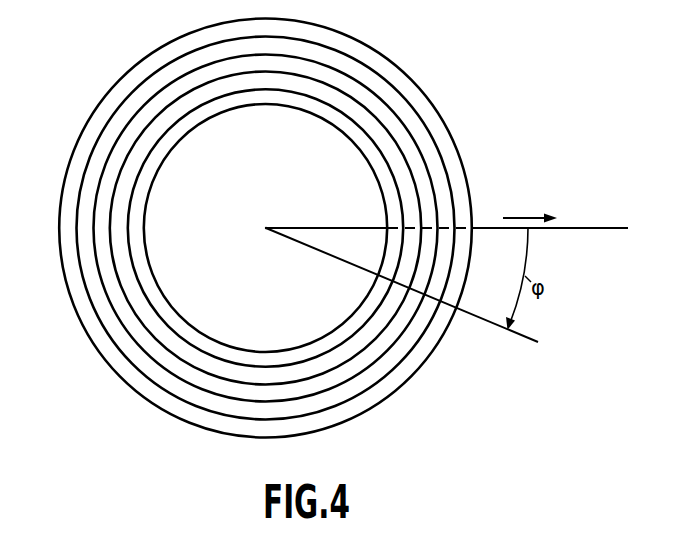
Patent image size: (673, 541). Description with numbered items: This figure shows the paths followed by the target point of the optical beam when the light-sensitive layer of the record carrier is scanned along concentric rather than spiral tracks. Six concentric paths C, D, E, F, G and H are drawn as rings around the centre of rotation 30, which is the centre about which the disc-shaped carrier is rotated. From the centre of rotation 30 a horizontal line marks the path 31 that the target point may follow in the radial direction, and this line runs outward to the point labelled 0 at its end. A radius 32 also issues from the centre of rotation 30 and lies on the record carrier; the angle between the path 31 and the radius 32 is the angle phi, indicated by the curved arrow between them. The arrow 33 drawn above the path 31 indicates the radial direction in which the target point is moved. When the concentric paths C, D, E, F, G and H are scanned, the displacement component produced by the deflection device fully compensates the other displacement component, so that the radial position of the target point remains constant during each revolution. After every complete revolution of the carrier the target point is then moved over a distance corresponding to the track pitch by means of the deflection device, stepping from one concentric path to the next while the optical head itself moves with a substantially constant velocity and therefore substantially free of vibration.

The centre of rotation 30 is at (266, 228).
The path 31 is at (596, 228).
The radius 32 is at (536, 344).
The arrow 33 is at (526, 228).
The origin point 0 is at (643, 228).
The concentric path C is at (188, 305).
The concentric path D is at (200, 350).
The concentric path E is at (226, 380).
The concentric path F is at (248, 402).
The concentric path G is at (240, 418).
The concentric path H is at (294, 435).